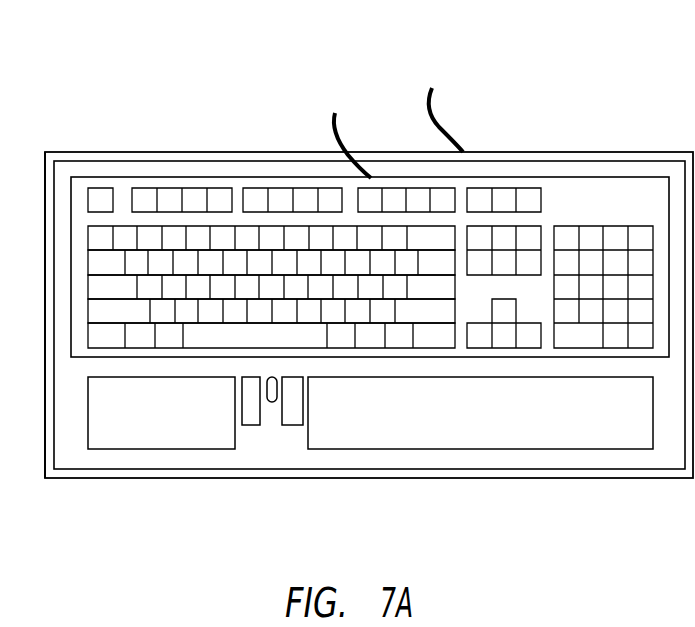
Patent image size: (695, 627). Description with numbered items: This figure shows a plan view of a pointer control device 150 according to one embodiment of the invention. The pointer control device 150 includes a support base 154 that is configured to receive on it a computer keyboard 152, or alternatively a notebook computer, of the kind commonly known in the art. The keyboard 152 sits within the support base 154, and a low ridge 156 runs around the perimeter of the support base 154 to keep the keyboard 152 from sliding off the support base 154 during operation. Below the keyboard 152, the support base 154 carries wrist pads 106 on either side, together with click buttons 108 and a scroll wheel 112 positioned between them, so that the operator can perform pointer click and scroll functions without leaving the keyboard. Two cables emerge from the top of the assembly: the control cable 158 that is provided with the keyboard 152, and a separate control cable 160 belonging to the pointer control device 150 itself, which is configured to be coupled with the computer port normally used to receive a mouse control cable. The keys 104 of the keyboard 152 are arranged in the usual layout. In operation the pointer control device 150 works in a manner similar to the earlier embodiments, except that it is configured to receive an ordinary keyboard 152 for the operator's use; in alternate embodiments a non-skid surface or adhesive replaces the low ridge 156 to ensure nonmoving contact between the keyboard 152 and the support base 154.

The pointer control device 150 is at (120, 53).
The computer keyboard 152 is at (585, 190).
The support base 154 is at (675, 175).
The low ridge 156 is at (52, 176).
The control cable 158 is at (342, 110).
The control cable 160 is at (435, 108).
The keys 104 is at (220, 197).
The wrist pads 106 is at (133, 438).
The click buttons 108 is at (250, 415).
The scroll wheel 112 is at (272, 402).